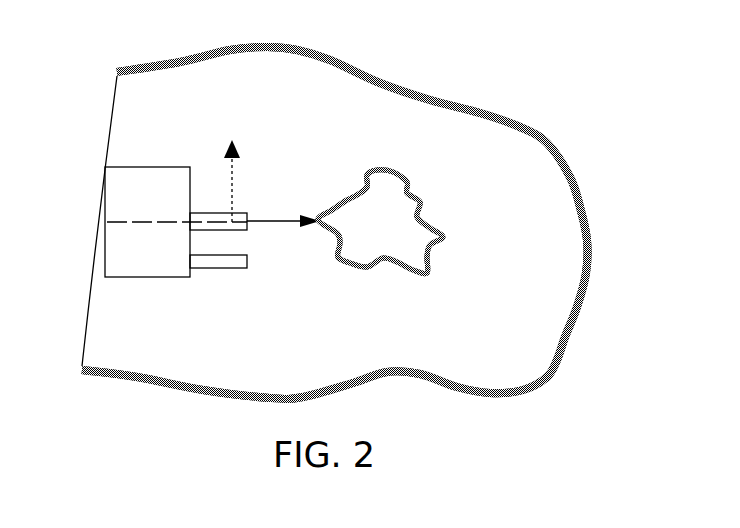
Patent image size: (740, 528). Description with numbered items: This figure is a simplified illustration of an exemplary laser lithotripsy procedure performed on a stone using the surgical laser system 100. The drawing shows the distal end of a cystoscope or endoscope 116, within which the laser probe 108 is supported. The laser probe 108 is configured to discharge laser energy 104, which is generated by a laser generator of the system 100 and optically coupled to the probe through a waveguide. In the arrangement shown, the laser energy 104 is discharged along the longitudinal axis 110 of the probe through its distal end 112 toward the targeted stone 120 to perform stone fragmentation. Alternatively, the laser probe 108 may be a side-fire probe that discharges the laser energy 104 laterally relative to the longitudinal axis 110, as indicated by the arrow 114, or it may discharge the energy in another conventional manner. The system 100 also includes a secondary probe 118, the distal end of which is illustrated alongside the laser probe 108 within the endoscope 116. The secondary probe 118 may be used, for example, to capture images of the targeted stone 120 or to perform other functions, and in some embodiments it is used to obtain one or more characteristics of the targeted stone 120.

The surgical laser system 100 is at (275, 125).
The laser energy 104 is at (302, 217).
The laser probe 108 is at (172, 221).
The longitudinal axis 110 is at (120, 222).
The distal end 112 is at (237, 230).
The arrow 114 is at (232, 141).
The cystoscope or endoscope 116 is at (123, 265).
The secondary probe 118 is at (230, 268).
The targeted stone 120 is at (413, 207).